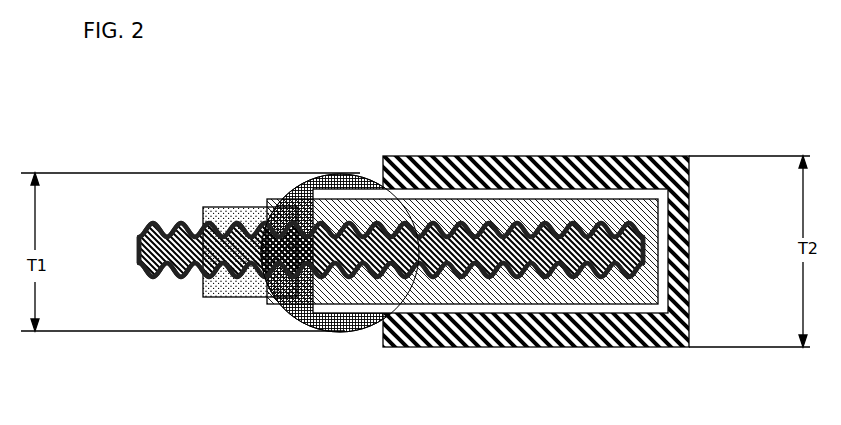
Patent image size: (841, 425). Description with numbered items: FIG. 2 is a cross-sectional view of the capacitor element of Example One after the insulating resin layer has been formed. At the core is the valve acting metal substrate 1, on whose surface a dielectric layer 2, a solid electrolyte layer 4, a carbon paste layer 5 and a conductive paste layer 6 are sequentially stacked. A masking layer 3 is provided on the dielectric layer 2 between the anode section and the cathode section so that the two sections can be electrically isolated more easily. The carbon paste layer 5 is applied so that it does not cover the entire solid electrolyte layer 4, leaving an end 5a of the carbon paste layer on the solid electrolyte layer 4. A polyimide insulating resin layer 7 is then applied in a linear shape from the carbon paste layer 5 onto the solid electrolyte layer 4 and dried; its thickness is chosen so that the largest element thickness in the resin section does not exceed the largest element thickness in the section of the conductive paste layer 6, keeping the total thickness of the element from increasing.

The valve acting metal substrate 1 is at (140, 248).
The dielectric layer 2 is at (573, 223).
The masking layer 3 is at (222, 290).
The solid electrolyte layer 4 is at (620, 293).
The carbon paste layer 5 is at (661, 233).
The end of the carbon paste layer 5a is at (312, 303).
The conductive paste layer 6 is at (667, 180).
The insulating resin layer 7 is at (334, 176).